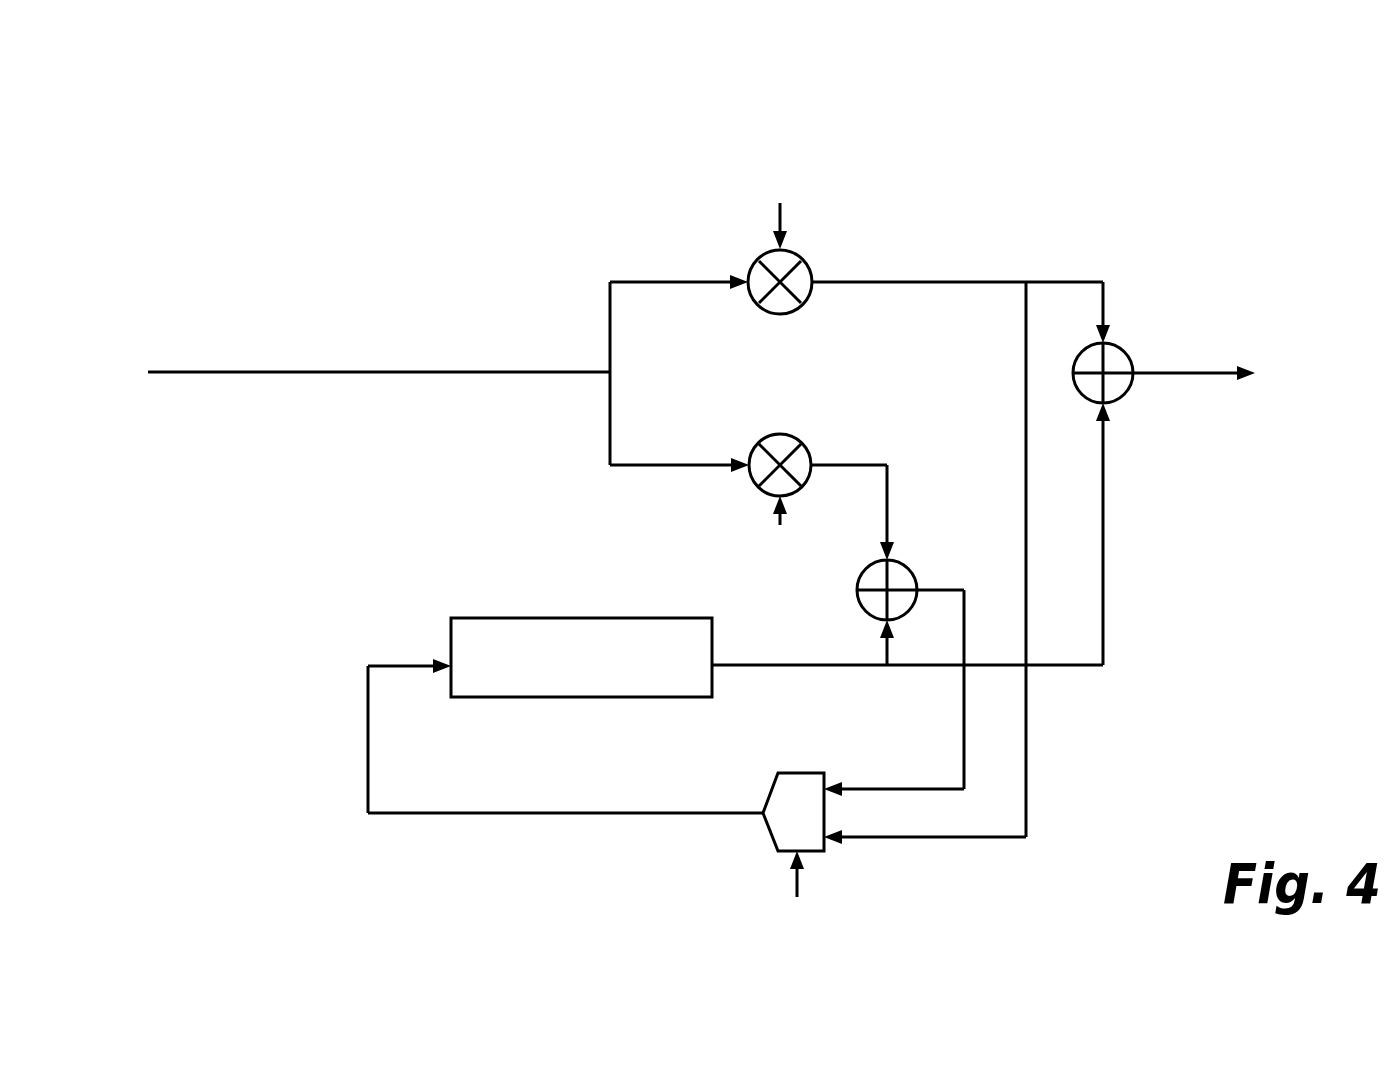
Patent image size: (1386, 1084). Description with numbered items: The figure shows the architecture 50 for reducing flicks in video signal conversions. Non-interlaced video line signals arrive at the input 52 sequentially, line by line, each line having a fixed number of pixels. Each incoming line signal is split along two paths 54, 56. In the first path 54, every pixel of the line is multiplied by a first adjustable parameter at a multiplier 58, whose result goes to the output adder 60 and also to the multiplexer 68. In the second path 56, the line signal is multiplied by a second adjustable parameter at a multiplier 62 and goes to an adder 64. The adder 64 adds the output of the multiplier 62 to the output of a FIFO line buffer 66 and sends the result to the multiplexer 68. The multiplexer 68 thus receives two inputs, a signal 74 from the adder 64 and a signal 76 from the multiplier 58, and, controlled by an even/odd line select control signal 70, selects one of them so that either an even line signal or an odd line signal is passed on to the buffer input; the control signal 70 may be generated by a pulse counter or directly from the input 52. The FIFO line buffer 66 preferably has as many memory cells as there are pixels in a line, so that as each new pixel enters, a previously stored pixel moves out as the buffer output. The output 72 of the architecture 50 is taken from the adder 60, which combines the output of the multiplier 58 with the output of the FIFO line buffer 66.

The architecture 50 is at (1229, 156).
The input 52 is at (341, 373).
The first path 54 is at (663, 272).
The second path 56 is at (638, 470).
The multiplier 58 is at (760, 273).
The output adder 60 is at (1115, 357).
The multiplier 62 is at (800, 457).
The adder 64 is at (902, 575).
The FIFO line buffer 66 is at (500, 630).
The multiplexer 68 is at (780, 795).
The even/odd line select control signal 70 is at (880, 967).
The output 72 is at (1244, 357).
The signal from the adder 74 is at (875, 783).
The signal from the multiplier 76 is at (877, 848).